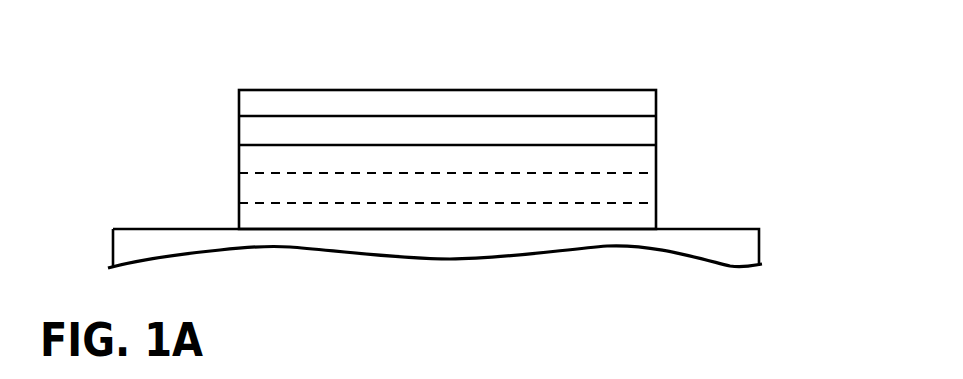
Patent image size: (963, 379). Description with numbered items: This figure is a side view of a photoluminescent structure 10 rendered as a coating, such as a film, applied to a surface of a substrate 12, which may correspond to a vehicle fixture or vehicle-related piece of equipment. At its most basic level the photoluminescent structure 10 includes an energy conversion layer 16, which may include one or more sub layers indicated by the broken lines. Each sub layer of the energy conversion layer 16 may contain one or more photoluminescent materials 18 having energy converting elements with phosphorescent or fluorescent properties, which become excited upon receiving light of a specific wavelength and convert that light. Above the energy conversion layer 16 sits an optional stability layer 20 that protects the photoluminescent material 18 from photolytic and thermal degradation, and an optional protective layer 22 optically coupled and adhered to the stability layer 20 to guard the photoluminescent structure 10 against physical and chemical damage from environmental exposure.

The photoluminescent structure 10 is at (594, 61).
The substrate 12 is at (702, 229).
The energy conversion layer 16 is at (239, 184).
The photoluminescent material 18 is at (580, 184).
The stability layer 20 is at (239, 128).
The protective layer 22 is at (331, 90).